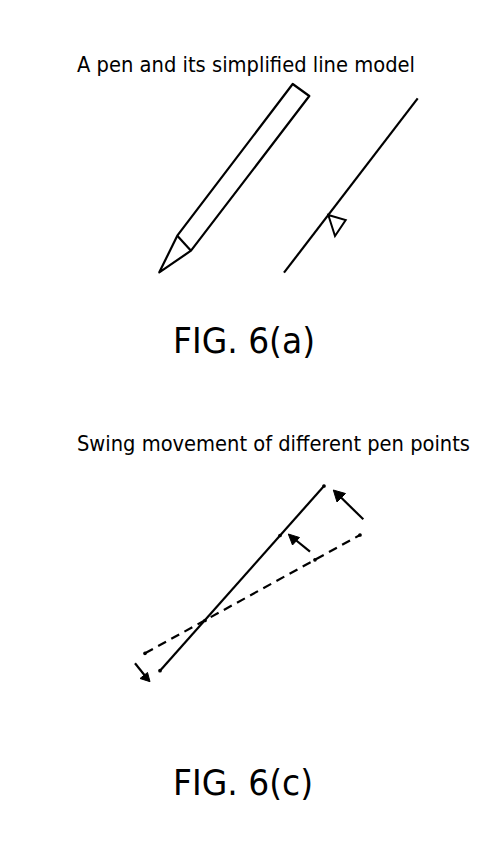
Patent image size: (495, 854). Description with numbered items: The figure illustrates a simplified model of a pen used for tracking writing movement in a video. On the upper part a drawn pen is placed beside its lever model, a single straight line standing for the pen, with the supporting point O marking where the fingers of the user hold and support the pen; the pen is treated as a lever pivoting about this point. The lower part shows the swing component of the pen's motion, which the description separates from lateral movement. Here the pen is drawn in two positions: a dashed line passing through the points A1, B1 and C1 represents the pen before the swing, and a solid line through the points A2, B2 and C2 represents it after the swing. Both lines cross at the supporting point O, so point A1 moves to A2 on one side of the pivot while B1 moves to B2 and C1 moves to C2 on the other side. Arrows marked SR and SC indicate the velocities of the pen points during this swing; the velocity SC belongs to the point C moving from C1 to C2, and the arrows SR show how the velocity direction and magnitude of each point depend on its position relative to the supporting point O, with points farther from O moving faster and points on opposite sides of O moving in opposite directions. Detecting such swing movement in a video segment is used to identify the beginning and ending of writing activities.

In FIG. 6A, the supporting point O is at (325, 216).
In FIG. 6C, the supporting point O is at (212, 636).
In FIG. 6C, the pen point A at first position A1 is at (127, 650).
In FIG. 6C, the pen point A at second position A2 is at (158, 693).
In FIG. 6C, the pen point B at first position B1 is at (330, 576).
In FIG. 6C, the pen point B at second position B2 is at (268, 515).
In FIG. 6C, the pen point C at first position C1 is at (379, 544).
In FIG. 6C, the pen point C at second position C2 is at (310, 473).
In FIG. 6C, the swing velocity of pen point SR is at (218, 608).
In FIG. 6C, the swing velocity of point C SC is at (354, 501).